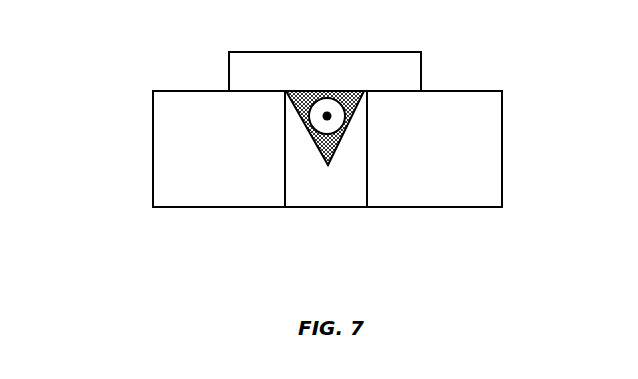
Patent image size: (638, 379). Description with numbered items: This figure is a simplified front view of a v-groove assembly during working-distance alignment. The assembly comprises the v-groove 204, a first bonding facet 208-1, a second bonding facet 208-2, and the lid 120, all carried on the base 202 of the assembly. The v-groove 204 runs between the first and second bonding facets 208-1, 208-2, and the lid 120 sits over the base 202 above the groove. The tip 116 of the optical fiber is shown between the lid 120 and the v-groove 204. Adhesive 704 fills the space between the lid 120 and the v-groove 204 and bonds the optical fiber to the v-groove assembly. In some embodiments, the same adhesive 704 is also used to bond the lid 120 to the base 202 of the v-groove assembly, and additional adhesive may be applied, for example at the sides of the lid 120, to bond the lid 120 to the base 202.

The tip 116 is at (327, 116).
The lid 120 is at (247, 63).
The base 202 is at (152, 101).
The v-groove 204 is at (298, 142).
The first bonding facet 208-1 is at (165, 140).
The second bonding facet 208-2 is at (489, 133).
The adhesive 704 is at (358, 97).